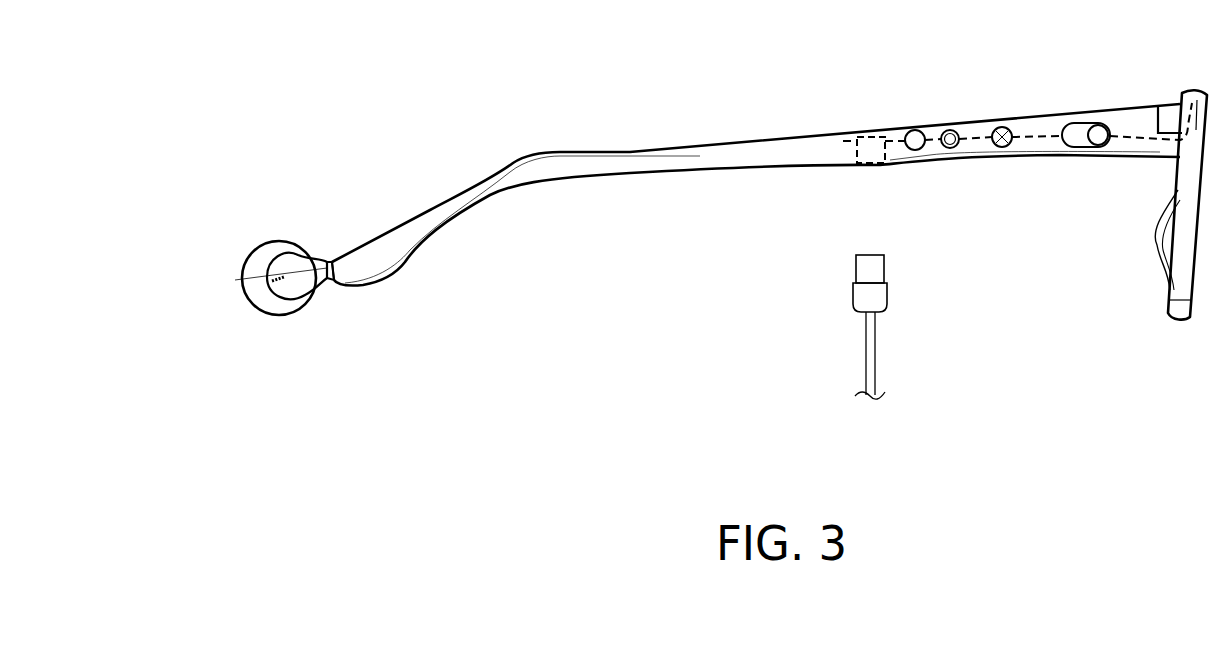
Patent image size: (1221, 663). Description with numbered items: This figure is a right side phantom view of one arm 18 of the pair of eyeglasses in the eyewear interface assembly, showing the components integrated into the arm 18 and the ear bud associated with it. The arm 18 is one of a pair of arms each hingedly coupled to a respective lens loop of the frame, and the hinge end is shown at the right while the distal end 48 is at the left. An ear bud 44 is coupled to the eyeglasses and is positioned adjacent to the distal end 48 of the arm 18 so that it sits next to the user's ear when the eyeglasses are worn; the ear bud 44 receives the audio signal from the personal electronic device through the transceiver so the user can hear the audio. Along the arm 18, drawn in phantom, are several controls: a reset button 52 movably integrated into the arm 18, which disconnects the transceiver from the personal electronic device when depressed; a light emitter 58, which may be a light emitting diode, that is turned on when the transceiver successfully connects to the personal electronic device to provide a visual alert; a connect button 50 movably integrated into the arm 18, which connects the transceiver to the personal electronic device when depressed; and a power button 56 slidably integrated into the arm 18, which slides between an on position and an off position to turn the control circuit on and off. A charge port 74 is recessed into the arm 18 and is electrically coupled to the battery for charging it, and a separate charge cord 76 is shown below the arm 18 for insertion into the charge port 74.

The arm 18 is at (612, 150).
The ear bud 44 is at (243, 280).
The distal end 48 is at (337, 285).
The charge port 74 is at (860, 133).
The reset button 52 is at (917, 128).
The light emitter 58 is at (950, 148).
The connect button 50 is at (1002, 126).
The power button 56 is at (1098, 125).
The charge cord 76 is at (860, 276).